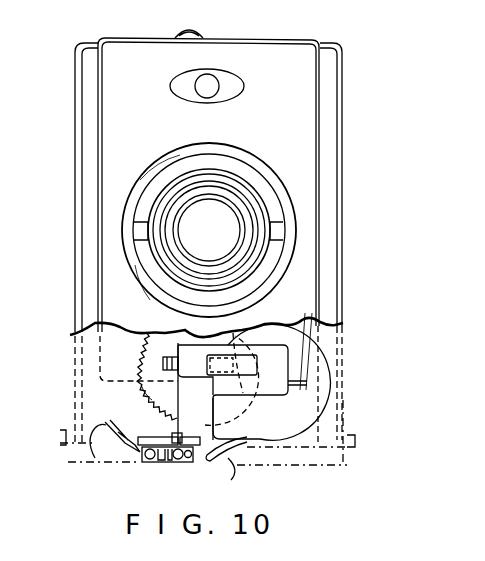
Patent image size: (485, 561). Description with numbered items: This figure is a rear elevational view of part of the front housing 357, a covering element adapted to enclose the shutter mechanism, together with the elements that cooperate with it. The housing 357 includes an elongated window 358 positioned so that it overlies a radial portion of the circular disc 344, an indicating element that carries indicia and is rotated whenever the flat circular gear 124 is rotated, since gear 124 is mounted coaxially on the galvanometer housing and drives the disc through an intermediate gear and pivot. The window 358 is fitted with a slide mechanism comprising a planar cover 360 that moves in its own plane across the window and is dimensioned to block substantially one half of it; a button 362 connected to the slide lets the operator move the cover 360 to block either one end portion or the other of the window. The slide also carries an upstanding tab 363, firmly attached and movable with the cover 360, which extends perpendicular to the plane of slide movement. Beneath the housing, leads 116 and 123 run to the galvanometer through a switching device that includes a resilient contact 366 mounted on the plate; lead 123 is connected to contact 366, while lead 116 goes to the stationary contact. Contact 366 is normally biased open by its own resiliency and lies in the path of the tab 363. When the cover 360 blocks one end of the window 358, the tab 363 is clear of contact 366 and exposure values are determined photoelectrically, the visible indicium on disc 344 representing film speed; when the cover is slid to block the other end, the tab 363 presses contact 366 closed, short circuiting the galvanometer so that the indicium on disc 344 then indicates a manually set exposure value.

The front housing 357 is at (328, 256).
The elongated window 358 is at (178, 345).
The planar cover 360 is at (277, 368).
The button 362 is at (245, 412).
The circular disc 344 is at (310, 398).
The flat circular gear 124 is at (142, 393).
The tab 363 is at (176, 436).
The resilient contact 366 is at (160, 455).
The lead 116 is at (230, 463).
The lead 123 is at (96, 460).